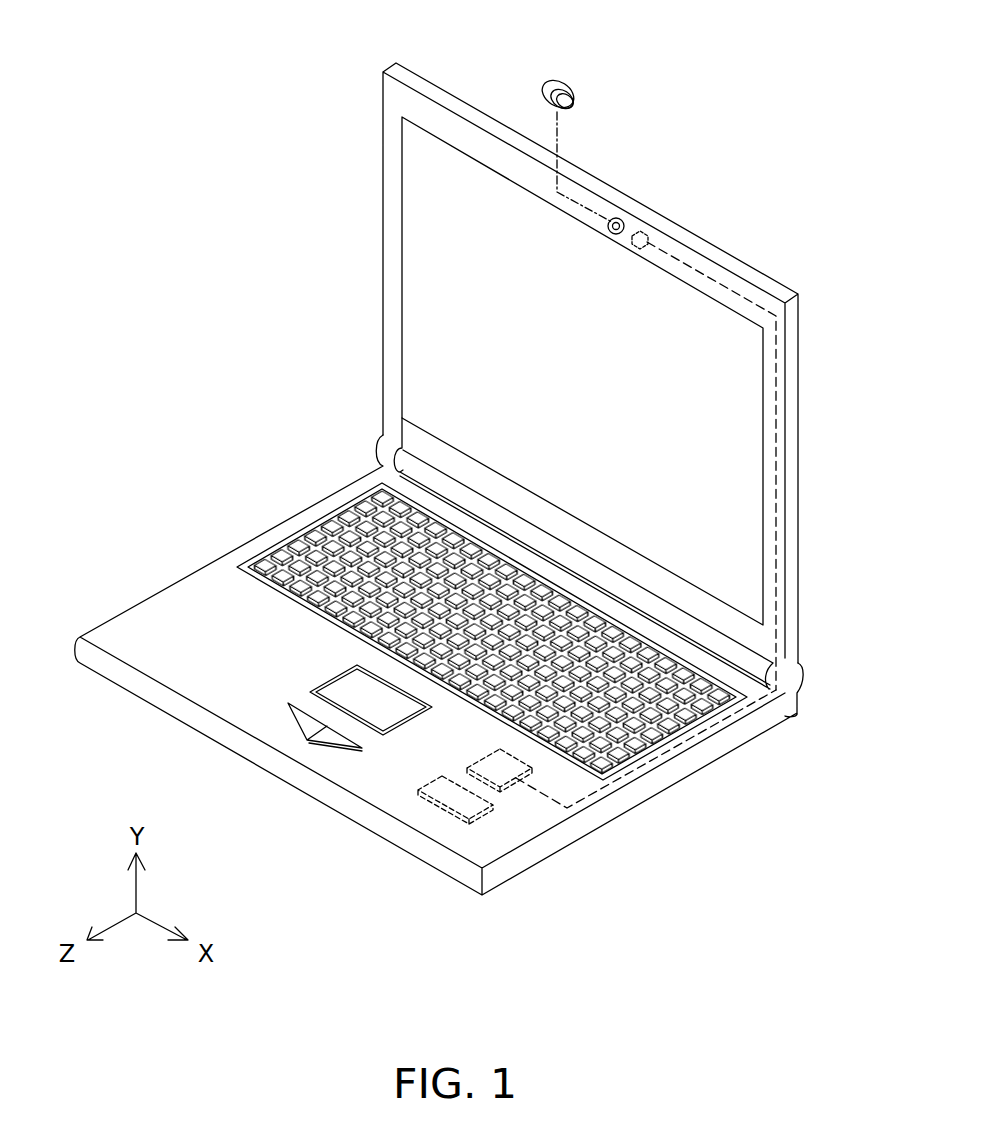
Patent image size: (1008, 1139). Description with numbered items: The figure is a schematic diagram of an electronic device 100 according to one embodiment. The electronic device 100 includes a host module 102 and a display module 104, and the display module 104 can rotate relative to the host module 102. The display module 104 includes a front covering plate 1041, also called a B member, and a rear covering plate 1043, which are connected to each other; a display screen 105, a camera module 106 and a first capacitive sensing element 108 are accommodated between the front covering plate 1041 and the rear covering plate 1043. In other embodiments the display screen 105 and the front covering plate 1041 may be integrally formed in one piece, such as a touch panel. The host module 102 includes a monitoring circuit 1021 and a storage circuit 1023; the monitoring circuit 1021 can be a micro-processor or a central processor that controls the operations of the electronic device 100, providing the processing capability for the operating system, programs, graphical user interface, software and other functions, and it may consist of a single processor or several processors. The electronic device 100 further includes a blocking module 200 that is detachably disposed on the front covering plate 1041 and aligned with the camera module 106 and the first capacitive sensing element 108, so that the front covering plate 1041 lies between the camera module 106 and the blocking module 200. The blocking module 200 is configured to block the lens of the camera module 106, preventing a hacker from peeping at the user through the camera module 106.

The electronic device 100 is at (214, 127).
The host module 102 is at (644, 812).
The monitoring circuit 1021 is at (512, 790).
The storage circuit 1023 is at (455, 794).
The display module 104 is at (799, 565).
The front covering plate 1041 is at (408, 102).
The rear covering plate 1043 is at (474, 119).
The display screen 105 is at (730, 424).
The camera module 106 is at (613, 218).
The first capacitive sensing element 108 is at (641, 232).
The blocking module 200 is at (562, 82).